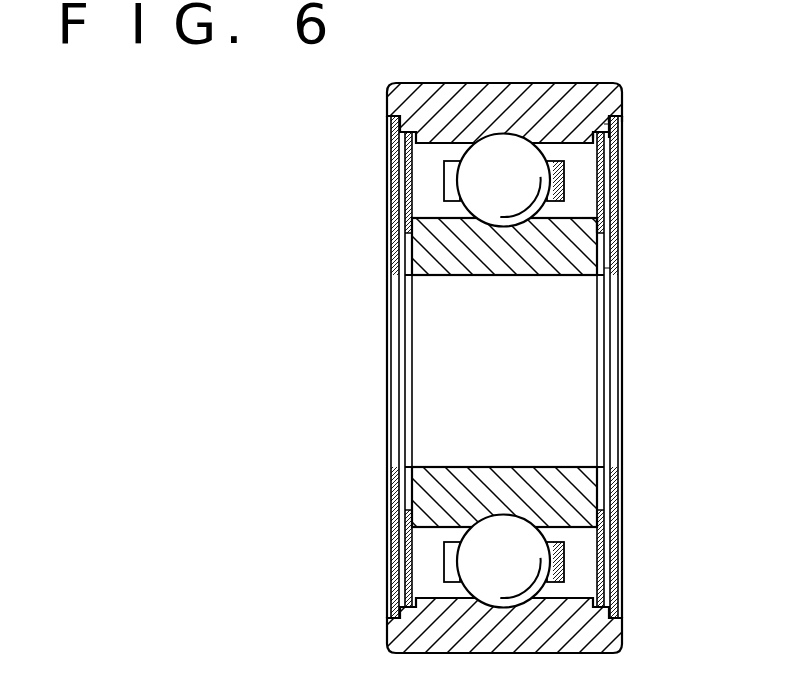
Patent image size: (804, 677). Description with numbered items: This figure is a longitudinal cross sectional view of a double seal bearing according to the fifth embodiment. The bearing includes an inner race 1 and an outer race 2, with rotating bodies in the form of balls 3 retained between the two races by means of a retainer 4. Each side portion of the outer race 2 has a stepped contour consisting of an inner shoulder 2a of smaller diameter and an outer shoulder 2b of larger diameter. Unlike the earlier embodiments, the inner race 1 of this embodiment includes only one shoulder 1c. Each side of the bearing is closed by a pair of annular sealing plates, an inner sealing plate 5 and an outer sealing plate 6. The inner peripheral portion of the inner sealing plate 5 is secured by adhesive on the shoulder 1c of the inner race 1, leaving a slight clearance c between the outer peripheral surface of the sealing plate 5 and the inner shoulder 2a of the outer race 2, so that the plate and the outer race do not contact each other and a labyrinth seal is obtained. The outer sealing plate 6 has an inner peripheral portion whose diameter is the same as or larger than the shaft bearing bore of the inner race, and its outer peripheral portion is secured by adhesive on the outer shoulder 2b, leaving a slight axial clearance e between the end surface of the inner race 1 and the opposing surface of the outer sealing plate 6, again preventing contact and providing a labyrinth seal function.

The inner race 1 is at (437, 273).
The shoulder 1c is at (613, 224).
The outer race 2 is at (387, 100).
The inner shoulder 2a is at (608, 150).
The outer shoulder 2b is at (622, 128).
The balls 3 is at (493, 226).
The retainer 4 is at (558, 201).
The inner sealing plate 5 is at (607, 167).
The outer sealing plate 6 is at (612, 188).
The clearance c is at (604, 127).
The axial clearance e is at (610, 268).